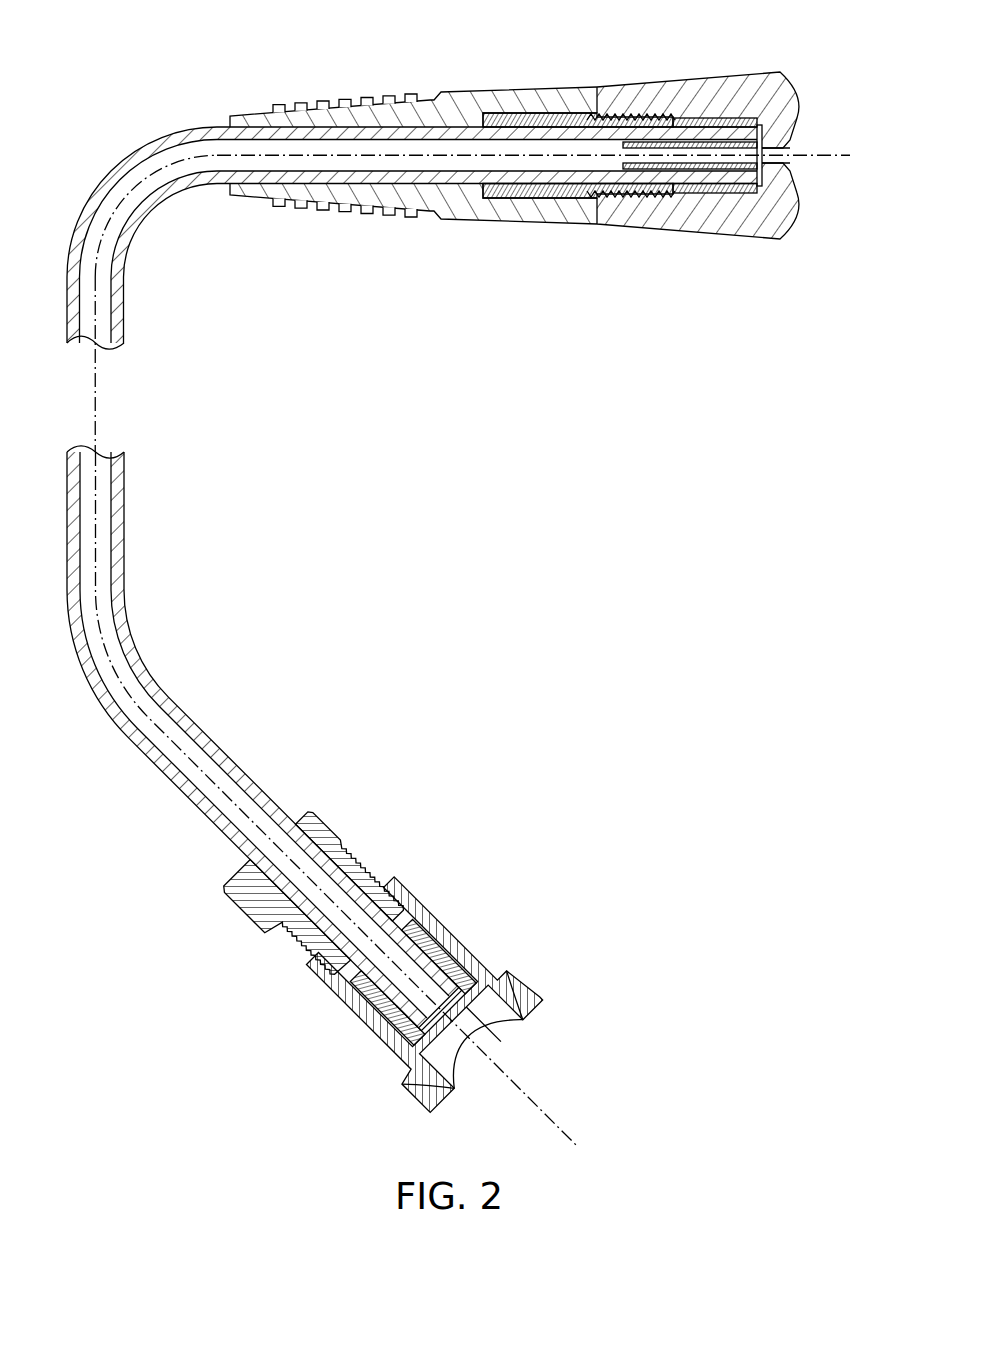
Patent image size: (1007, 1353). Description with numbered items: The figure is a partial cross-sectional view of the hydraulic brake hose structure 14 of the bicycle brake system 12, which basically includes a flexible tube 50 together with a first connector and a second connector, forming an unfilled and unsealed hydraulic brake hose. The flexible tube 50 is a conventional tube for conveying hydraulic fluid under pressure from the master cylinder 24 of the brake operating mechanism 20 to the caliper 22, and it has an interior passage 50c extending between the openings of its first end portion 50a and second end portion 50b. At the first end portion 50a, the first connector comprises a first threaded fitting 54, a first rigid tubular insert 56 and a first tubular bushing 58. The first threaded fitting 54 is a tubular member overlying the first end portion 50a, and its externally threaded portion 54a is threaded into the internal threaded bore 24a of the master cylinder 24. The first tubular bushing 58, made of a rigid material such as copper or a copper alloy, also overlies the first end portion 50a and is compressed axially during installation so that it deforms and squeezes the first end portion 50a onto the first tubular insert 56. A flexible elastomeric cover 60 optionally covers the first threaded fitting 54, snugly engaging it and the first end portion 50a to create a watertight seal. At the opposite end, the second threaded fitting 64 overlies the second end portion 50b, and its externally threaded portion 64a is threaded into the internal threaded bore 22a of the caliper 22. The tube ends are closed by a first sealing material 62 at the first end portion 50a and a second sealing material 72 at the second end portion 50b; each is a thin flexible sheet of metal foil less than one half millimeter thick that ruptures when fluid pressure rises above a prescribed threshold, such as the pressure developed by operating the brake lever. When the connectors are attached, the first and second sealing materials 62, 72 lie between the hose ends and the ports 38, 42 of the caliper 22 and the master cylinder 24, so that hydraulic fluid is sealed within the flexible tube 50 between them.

The fluid delivery assembly 12 is at (159, 72).
The hydraulic brake hose structure 14 is at (85, 199).
The brake operating mechanism 20 is at (717, 167).
The caliper 22 is at (354, 1022).
The internal threaded bore 22a is at (403, 914).
The master cylinder 24 is at (748, 215).
The internal threaded bore 24a is at (664, 117).
The port 38 is at (793, 150).
The port 42 is at (470, 1062).
The flexible tube 50 is at (130, 318).
The first end portion 50a is at (723, 123).
The second end portion 50b is at (448, 962).
The interior passage 50c is at (115, 522).
The first threaded fitting 54 is at (530, 203).
The externally threaded portion 54a is at (611, 198).
The first rigid tubular insert 56 is at (643, 170).
The first tubular bushing 58 is at (707, 198).
The cover 60 is at (467, 91).
The first sealing material 62 is at (762, 165).
The second threaded fitting 64 is at (335, 822).
The externally threaded portion 64a is at (300, 937).
The second sealing material 72 is at (488, 1037).